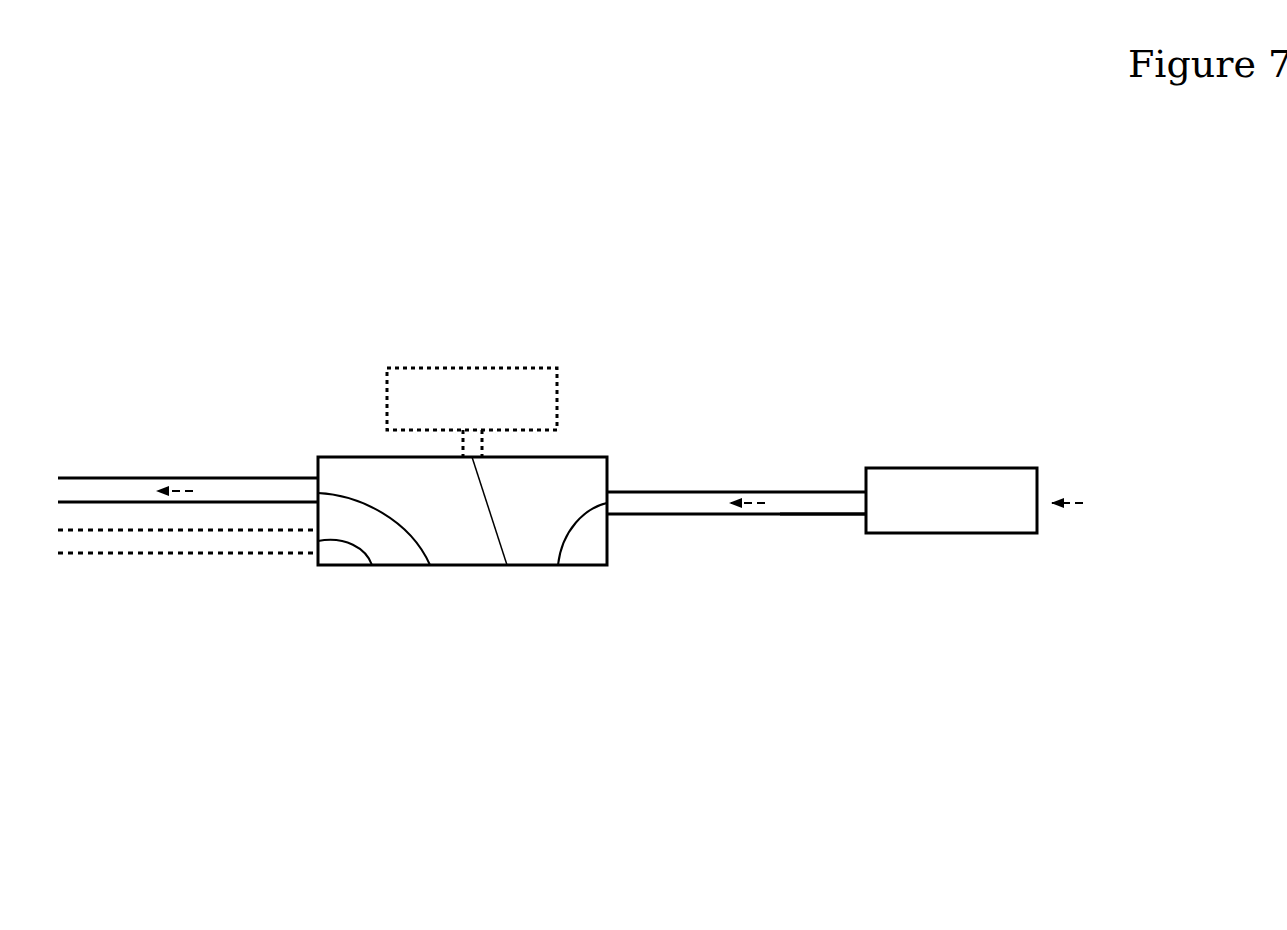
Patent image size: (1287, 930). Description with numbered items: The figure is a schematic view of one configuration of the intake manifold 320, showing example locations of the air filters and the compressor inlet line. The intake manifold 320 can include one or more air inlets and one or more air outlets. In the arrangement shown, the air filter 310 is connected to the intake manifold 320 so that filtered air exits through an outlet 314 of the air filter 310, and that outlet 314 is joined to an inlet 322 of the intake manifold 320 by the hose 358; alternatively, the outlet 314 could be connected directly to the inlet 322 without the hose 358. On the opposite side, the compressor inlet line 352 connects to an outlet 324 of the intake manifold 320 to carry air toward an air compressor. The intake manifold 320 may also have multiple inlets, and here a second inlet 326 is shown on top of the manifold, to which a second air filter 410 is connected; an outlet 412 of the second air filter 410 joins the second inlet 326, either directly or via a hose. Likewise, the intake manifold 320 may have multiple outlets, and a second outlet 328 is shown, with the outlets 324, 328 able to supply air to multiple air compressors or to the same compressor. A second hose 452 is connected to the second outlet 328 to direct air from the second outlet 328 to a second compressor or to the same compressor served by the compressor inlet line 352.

The air filter 310 is at (947, 449).
The outlet of the air filter 314 is at (866, 498).
The intake manifold 320 is at (623, 429).
The inlet of the intake manifold 322 is at (558, 565).
The outlet of the intake manifold 324 is at (430, 565).
The second inlet 326 is at (507, 565).
The second outlet 328 is at (372, 565).
The compressor inlet line 352 is at (125, 477).
The hose 358 is at (735, 490).
The second air filter 410 is at (504, 355).
The outlet of the second air filter 412 is at (463, 436).
The second hose 452 is at (173, 555).